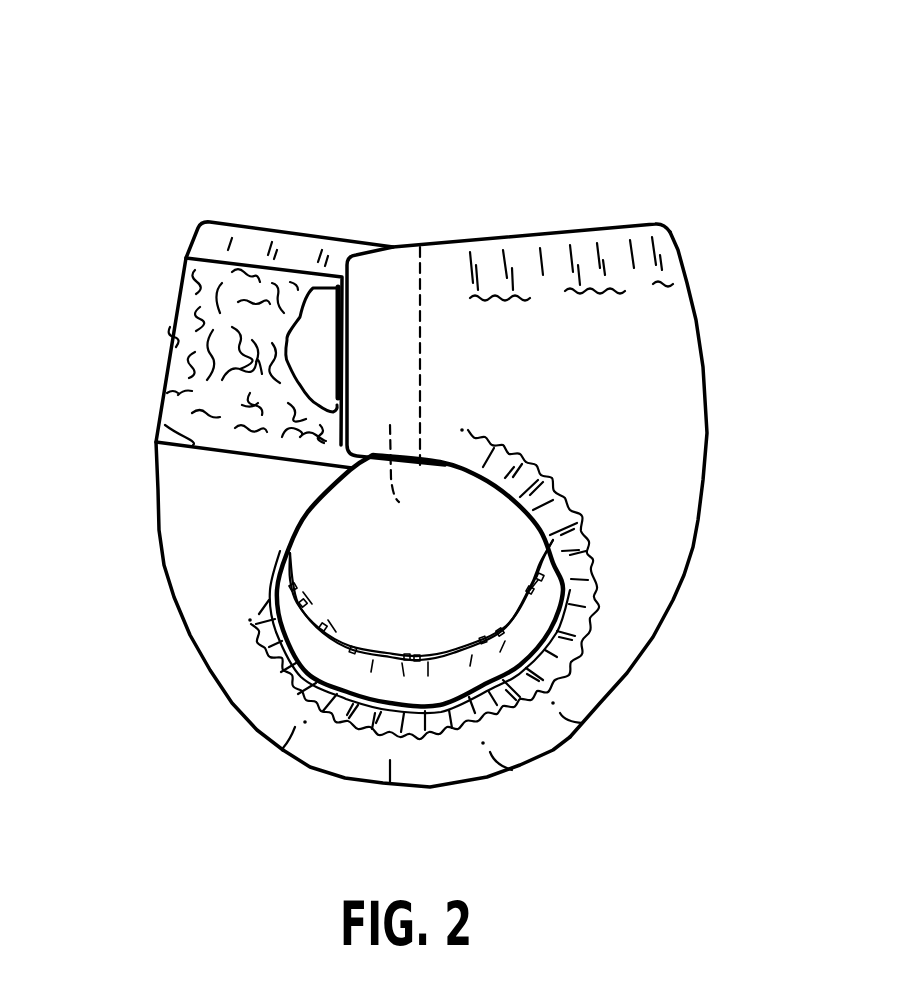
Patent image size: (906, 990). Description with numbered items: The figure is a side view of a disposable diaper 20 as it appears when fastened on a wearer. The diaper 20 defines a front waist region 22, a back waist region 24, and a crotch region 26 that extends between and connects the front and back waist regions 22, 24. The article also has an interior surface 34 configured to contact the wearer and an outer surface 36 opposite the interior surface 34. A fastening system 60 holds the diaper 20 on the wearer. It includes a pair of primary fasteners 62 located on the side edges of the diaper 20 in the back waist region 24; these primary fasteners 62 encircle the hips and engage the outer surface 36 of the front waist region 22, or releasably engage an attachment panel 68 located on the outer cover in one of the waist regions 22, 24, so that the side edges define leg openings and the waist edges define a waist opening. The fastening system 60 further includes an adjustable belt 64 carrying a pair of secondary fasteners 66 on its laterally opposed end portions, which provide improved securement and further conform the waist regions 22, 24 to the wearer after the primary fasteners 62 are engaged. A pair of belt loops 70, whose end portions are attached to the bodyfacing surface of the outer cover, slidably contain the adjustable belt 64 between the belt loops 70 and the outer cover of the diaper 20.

The disposable diaper 20 is at (144, 72).
The front waist region 22 is at (104, 468).
The back waist region 24 is at (782, 410).
The crotch region 26 is at (526, 832).
The interior surface 34 is at (420, 657).
The outer surface 36 is at (193, 640).
The fastening system 60 is at (390, 122).
The primary fasteners 62 is at (398, 273).
The adjustable belt 64 is at (340, 285).
The secondary fasteners 66 is at (310, 290).
The attachment panel 68 is at (200, 243).
The belt loops 70 is at (411, 470).